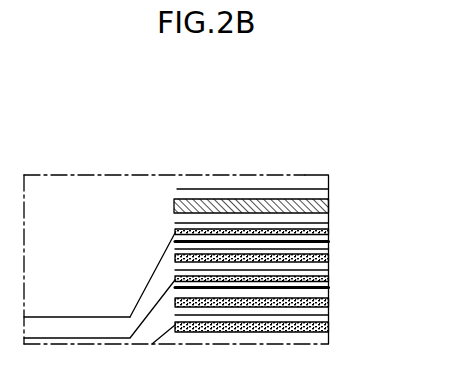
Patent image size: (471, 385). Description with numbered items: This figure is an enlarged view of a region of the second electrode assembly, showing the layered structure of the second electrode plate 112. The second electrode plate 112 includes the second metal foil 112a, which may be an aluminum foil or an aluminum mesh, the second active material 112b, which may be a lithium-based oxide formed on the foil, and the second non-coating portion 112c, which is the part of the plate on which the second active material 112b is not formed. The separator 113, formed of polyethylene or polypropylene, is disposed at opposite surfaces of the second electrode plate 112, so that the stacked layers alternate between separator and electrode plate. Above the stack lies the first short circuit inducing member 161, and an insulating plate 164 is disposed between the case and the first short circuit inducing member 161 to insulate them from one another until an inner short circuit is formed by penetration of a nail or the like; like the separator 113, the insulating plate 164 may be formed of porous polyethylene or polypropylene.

The second electrode plate 112 is at (176, 198).
The second metal foil 112a is at (177, 194).
The second active material 112b is at (216, 232).
The second non-coating portion 112c is at (55, 317).
The first short circuit inducing member 161 is at (262, 192).
The insulating plate 164 is at (305, 175).
The separator 113 is at (310, 257).